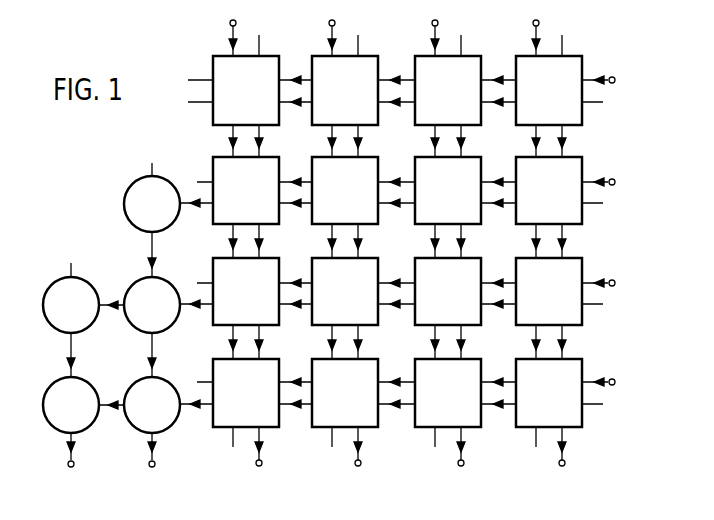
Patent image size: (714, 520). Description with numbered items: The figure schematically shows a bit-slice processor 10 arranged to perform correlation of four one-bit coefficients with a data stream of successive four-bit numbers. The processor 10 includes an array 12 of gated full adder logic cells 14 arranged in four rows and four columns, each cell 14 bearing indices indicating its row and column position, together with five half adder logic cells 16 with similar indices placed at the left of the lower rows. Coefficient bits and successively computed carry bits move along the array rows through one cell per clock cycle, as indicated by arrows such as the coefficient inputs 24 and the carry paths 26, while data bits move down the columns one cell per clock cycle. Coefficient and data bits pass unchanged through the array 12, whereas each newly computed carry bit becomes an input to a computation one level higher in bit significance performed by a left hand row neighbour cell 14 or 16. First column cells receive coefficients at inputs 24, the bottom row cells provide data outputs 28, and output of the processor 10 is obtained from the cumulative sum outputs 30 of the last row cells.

The bit-slice processor 10 is at (176, 62).
The array 12 is at (590, 163).
The gated full adder logic cell 14 is at (397, 241).
The half adder logic cell 16 is at (111, 291).
The coefficient inputs 24 is at (496, 77).
The carry bit path 26 is at (497, 105).
The data outputs 28 is at (232, 147).
The cumulative sum outputs 30 is at (562, 140).